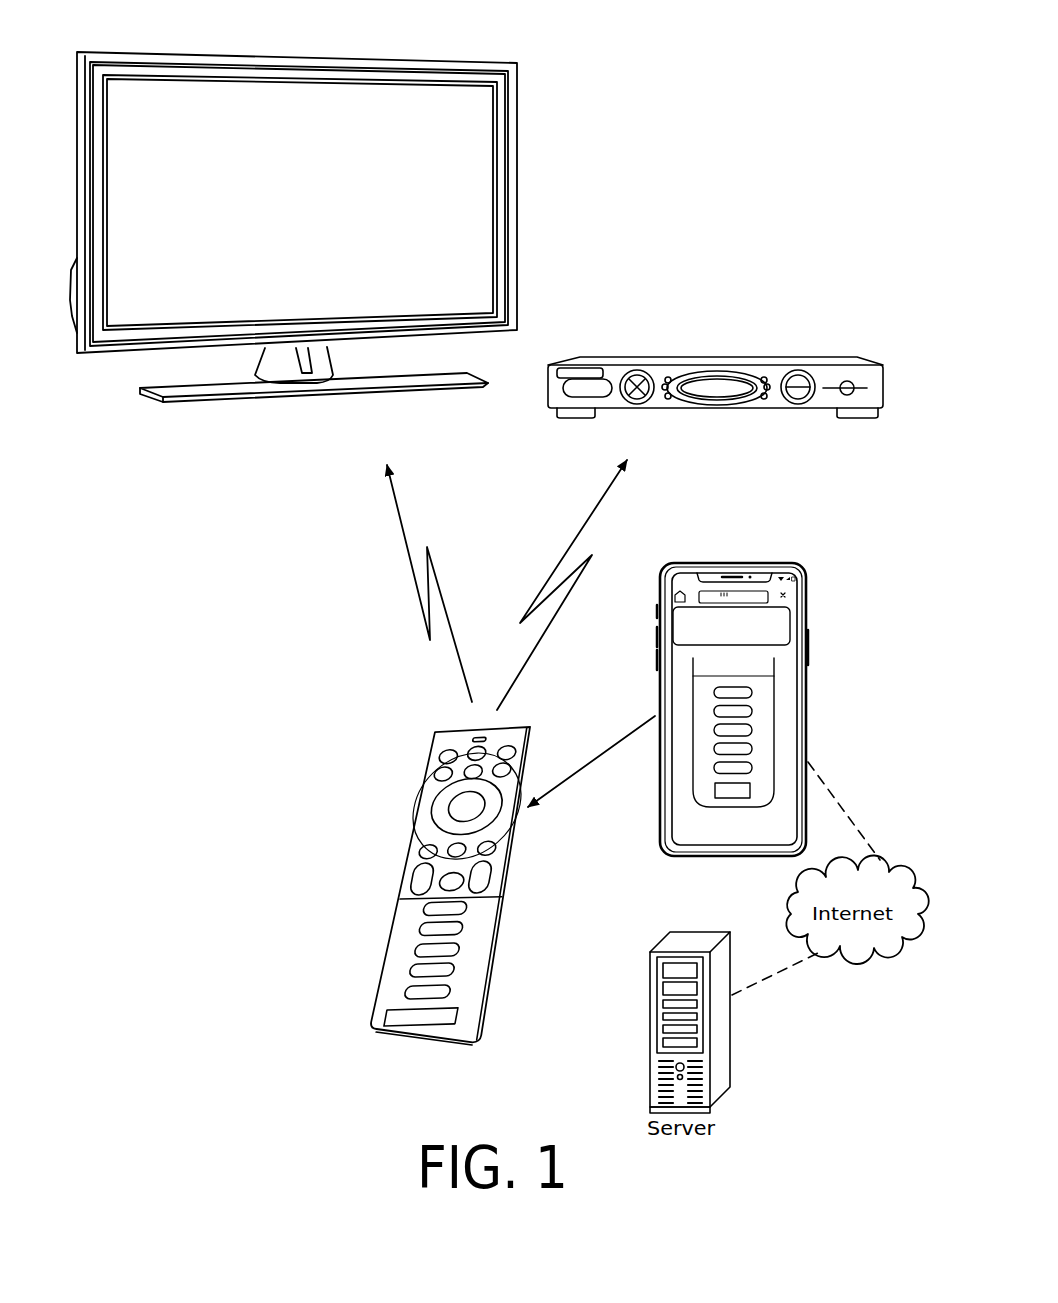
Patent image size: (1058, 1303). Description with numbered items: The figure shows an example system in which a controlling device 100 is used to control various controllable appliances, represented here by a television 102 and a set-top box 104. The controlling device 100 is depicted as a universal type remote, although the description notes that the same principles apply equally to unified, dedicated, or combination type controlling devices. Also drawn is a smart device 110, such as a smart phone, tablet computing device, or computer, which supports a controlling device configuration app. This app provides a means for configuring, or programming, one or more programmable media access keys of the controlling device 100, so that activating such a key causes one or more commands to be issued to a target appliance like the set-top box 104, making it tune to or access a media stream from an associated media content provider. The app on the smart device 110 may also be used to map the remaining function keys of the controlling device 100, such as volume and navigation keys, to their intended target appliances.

The controlling device 100 is at (415, 887).
The television 102 is at (458, 59).
The set-top box 104 is at (675, 357).
The smart device 110 is at (800, 652).